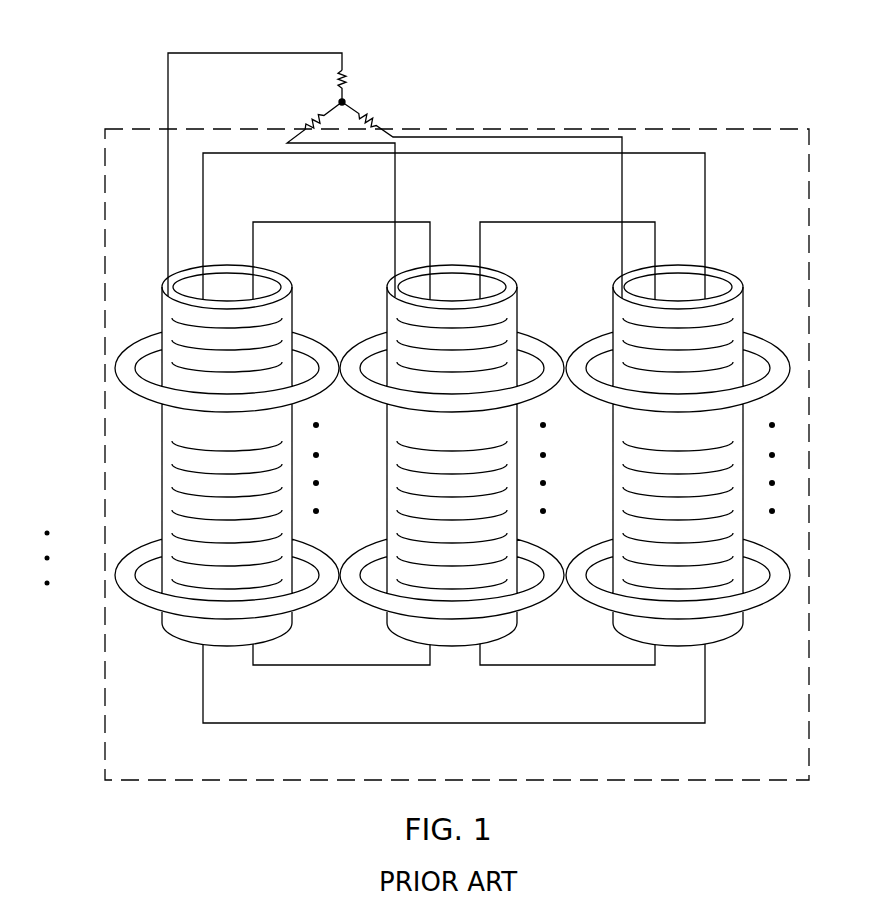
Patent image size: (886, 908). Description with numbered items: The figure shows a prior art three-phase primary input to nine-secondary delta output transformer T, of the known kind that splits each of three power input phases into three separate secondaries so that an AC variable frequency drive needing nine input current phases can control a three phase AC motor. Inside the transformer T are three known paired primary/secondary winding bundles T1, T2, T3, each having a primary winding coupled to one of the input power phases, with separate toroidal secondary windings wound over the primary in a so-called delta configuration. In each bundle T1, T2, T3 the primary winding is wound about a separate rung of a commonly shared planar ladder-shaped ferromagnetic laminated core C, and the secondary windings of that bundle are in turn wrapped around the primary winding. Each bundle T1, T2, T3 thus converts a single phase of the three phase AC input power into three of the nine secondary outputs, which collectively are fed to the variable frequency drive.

The 3-9 phase transformer T is at (670, 92).
The first paired primary/secondary winding bundle T1 is at (171, 639).
The second paired primary/secondary winding bundle T2 is at (390, 626).
The third paired primary/secondary winding bundle T3 is at (734, 639).
The ladder-shaped ferromagnetic laminated core C is at (321, 212).